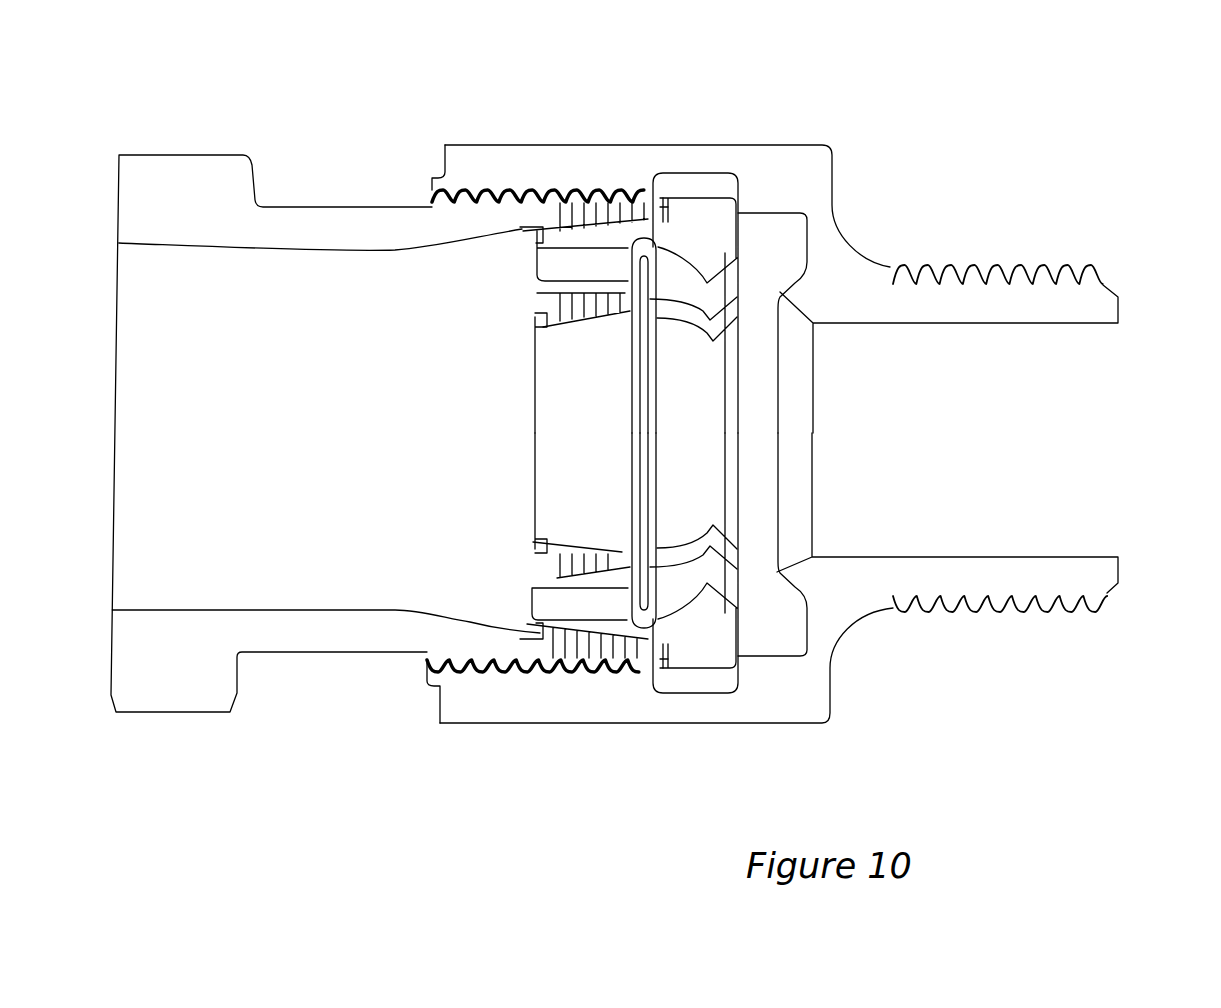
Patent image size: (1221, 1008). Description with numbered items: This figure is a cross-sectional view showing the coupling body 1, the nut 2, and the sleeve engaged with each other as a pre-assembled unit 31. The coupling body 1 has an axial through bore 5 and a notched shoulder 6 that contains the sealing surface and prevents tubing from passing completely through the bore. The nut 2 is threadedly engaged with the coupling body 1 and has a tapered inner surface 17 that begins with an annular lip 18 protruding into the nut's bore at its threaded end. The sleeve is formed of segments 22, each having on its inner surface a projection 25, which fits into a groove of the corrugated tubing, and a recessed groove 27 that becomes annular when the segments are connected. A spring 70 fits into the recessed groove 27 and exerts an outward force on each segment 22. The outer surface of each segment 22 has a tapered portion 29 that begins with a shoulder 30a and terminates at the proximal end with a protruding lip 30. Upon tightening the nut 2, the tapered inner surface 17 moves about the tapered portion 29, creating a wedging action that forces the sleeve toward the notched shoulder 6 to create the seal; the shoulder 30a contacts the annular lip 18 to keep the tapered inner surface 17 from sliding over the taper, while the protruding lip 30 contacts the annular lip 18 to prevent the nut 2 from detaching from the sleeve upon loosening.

The coupling body 1 is at (1075, 300).
The nut 2 is at (389, 588).
The axial through bore 5 is at (750, 437).
The notched shoulder 6 is at (765, 630).
The tapered inner surface 17 is at (495, 617).
The annular lip 18 is at (523, 226).
The segment 22 is at (568, 360).
The projection 25 is at (738, 330).
The recessed groove 27 is at (645, 235).
The tapered portion 29 is at (587, 230).
The protruding lip 30 is at (553, 663).
The shoulder 30a is at (663, 207).
The pre-assembled unit 31 is at (1057, 91).
The spring 70 is at (655, 385).